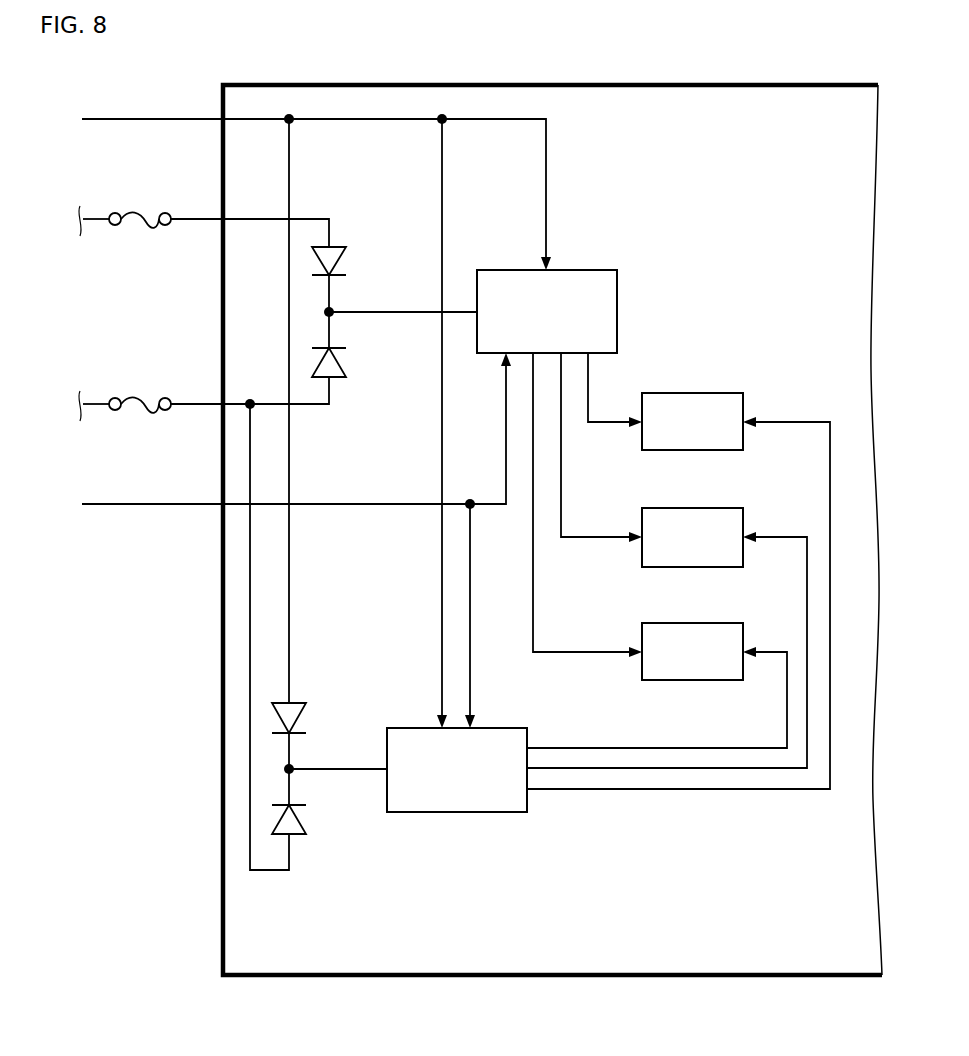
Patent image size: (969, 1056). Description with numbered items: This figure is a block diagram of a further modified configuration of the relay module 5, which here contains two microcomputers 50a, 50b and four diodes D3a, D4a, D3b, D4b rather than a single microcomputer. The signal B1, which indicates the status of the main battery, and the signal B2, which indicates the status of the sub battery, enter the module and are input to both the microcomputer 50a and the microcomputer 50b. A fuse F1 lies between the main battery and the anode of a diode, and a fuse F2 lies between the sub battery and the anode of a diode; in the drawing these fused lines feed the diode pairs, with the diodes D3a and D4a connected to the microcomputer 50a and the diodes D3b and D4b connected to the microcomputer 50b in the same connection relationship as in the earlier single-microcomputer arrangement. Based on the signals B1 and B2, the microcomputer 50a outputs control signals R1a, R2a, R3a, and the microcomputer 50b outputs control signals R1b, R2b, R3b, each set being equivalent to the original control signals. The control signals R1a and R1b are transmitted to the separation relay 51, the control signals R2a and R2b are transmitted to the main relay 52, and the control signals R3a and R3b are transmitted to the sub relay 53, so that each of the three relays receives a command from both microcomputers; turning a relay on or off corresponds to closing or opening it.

The relay module 5 is at (503, 977).
The microcomputer 50a is at (585, 269).
The microcomputer 50b is at (412, 727).
The separation relay 51 is at (712, 392).
The main relay 52 is at (714, 507).
The sub relay 53 is at (714, 622).
The signal B1 is at (300, 416).
The signal B2 is at (280, 540).
The fuse F1 is at (140, 228).
The fuse F2 is at (140, 413).
The diode D3a is at (348, 261).
The diode D4a is at (348, 362).
The diode D3b is at (308, 718).
The diode D4b is at (308, 819).
The control signal R1a is at (615, 403).
The control signal R2a is at (601, 463).
The control signal R3a is at (587, 520).
The control signal R1b is at (612, 746).
The control signal R2b is at (703, 770).
The control signal R3b is at (612, 791).